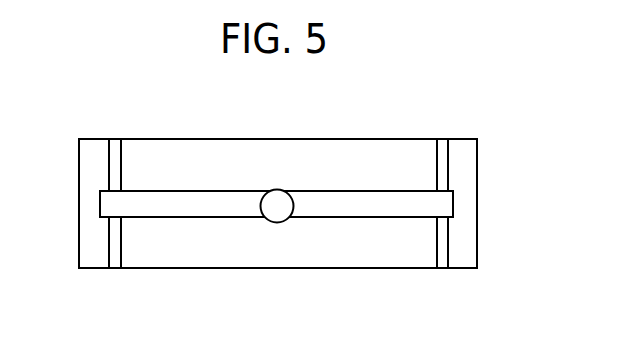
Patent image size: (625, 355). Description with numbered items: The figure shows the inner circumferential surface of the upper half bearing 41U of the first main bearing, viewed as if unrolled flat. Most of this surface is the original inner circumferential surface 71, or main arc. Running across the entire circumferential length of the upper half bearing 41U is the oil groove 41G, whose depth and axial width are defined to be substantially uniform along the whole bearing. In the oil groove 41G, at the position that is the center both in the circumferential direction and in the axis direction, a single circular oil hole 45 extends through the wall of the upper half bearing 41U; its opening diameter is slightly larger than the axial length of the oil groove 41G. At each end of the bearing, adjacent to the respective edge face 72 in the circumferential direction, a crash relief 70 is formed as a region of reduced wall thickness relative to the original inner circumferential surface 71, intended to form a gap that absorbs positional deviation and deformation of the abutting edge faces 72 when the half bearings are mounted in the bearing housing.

The upper half bearing 41U is at (278, 175).
The oil groove 41G is at (213, 206).
The oil hole 45 is at (277, 198).
The crash relief 70 is at (118, 258).
The original inner circumferential surface 71 is at (365, 162).
The edge face 72 is at (101, 258).